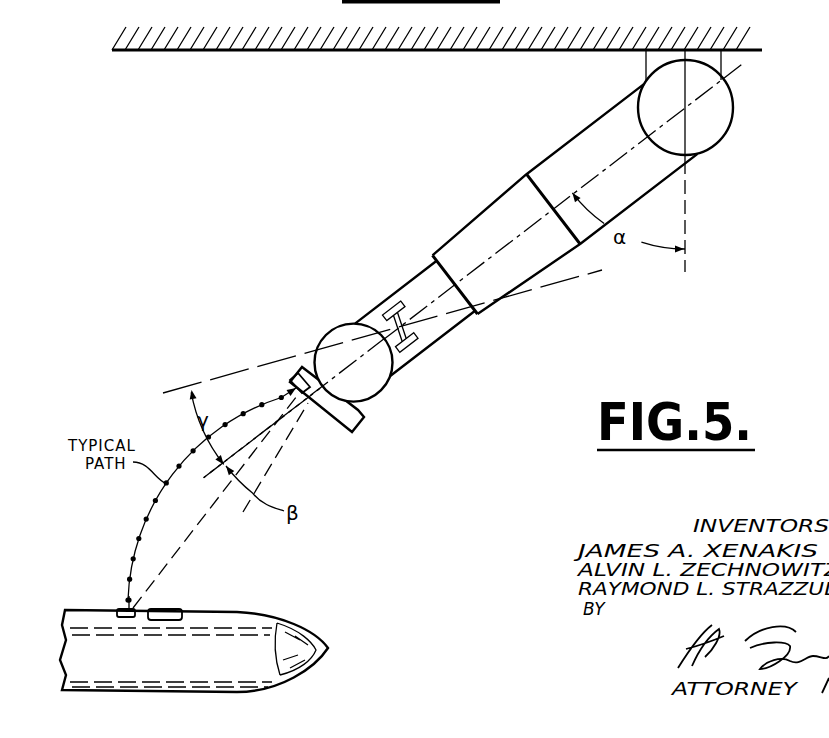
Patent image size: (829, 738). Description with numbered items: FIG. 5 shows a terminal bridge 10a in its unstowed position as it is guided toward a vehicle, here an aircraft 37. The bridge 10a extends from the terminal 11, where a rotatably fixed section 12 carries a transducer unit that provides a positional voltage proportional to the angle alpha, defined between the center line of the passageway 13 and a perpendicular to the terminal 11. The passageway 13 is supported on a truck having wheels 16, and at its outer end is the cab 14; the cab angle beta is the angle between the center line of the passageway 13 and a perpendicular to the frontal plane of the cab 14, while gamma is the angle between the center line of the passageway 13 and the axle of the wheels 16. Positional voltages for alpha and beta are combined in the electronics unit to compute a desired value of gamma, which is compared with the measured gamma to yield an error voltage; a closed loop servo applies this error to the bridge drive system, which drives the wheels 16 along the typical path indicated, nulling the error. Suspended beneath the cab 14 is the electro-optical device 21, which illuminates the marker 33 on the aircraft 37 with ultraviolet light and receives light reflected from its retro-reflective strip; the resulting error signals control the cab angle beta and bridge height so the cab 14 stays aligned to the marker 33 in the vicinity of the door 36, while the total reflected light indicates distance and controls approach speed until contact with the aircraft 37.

The terminal 11 is at (230, 50).
The terminal bridge 10a is at (428, 113).
The rotatably fixed section 12 is at (733, 108).
The passageway 13 is at (492, 209).
The cab 14 is at (380, 394).
The wheels 16 is at (434, 342).
The electro-optical device 21 is at (294, 378).
The marker 33 is at (121, 609).
The door 36 is at (178, 609).
The aircraft 37 is at (333, 647).